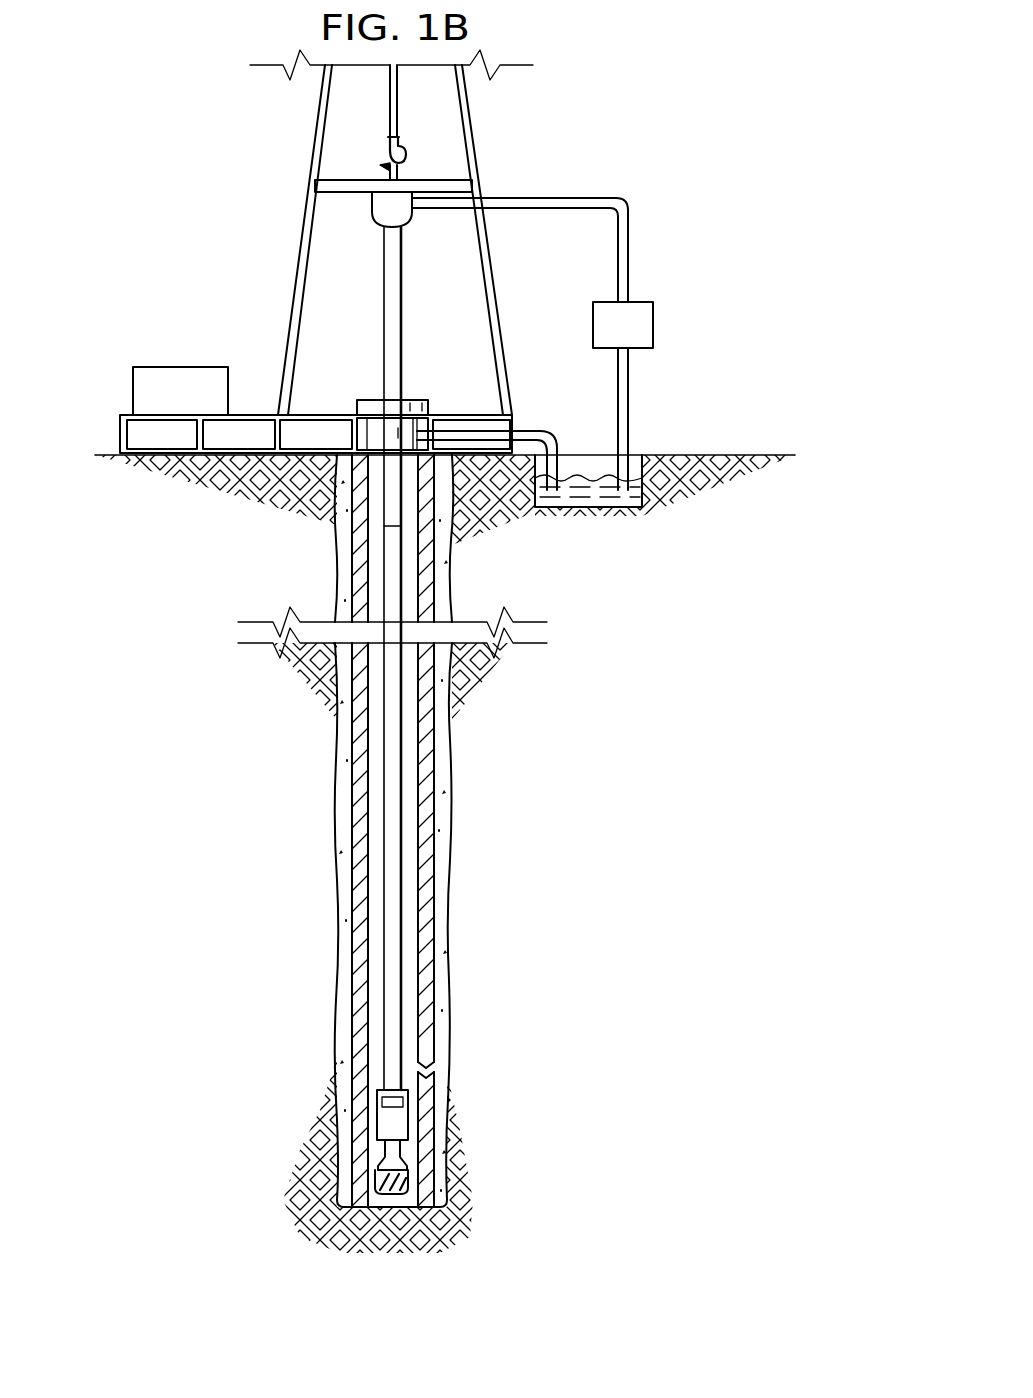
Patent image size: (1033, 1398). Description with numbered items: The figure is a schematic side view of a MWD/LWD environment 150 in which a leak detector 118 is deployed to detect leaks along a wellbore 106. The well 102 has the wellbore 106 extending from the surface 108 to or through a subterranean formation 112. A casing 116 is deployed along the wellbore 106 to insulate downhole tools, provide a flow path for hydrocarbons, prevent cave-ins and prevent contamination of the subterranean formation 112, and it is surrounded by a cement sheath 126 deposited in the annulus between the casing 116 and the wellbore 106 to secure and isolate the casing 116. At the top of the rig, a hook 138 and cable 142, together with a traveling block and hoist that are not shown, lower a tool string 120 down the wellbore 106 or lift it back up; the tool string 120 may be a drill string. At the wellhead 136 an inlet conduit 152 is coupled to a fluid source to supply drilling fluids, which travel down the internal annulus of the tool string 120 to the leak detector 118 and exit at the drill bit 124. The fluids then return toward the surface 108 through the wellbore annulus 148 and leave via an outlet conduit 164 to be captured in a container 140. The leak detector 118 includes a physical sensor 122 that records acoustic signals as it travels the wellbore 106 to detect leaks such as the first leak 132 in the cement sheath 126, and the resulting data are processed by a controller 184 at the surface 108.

The well 102 is at (418, 392).
The wellbore 106 is at (452, 814).
The surface 108 is at (735, 455).
The subterranean formation 112 is at (663, 741).
The casing 116 is at (430, 881).
The leak detector 118 is at (400, 1120).
The tool string 120 is at (384, 810).
The physical sensor 122 is at (385, 1100).
The drill bit 124 is at (407, 1180).
The cement sheath 126 is at (453, 762).
The first leak 132 is at (463, 1068).
The wellhead 136 is at (365, 398).
The hook 138 is at (405, 157).
The container 140 is at (582, 505).
The cable 142 is at (388, 123).
The wellbore annulus 148 is at (377, 922).
The MWD/LWD environment 150 is at (238, 217).
The inlet conduit 152 is at (598, 197).
The outlet conduit 164 is at (526, 427).
The controller 184 is at (182, 366).